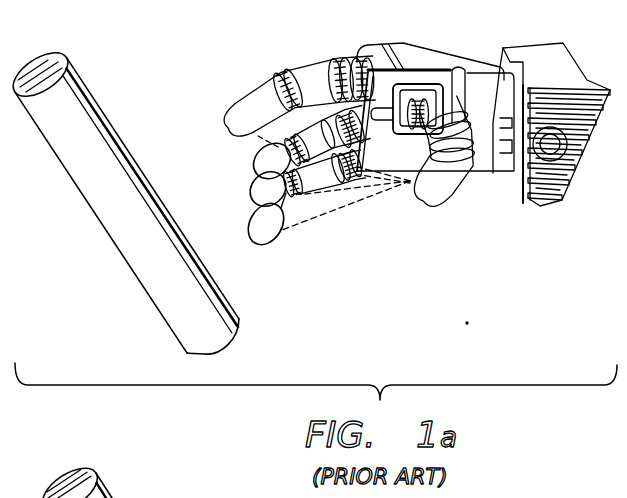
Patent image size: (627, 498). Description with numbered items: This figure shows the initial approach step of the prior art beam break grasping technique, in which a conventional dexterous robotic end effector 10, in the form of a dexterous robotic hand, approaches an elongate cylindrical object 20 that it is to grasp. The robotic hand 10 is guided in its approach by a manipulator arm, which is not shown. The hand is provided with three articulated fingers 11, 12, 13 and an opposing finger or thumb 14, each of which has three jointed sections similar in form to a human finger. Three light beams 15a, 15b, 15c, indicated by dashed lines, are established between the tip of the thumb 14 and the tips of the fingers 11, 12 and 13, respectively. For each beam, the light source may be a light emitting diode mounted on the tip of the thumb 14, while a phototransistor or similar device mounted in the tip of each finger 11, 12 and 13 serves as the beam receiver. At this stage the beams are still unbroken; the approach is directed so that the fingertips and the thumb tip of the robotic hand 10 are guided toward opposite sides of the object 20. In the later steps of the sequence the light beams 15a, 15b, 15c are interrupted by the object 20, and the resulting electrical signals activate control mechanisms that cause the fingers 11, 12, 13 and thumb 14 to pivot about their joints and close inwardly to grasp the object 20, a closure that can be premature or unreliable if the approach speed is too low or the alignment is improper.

The dexterous robotic end effector 10 is at (396, 161).
The articulated finger 11 is at (260, 228).
The articulated finger 12 is at (250, 173).
The articulated finger 13 is at (237, 118).
The thumb 14 is at (440, 190).
The light beam 15a is at (318, 217).
The light beam 15b is at (345, 197).
The light beam 15c is at (362, 184).
The elongate cylindrical object 20 is at (214, 297).